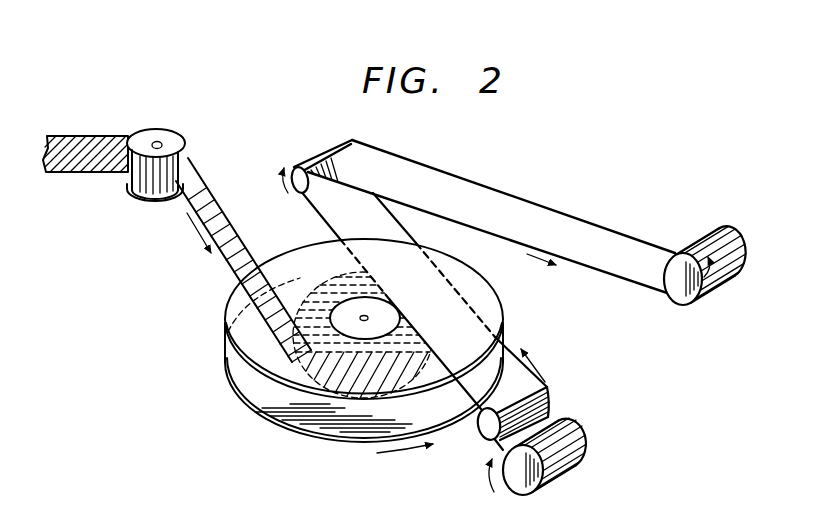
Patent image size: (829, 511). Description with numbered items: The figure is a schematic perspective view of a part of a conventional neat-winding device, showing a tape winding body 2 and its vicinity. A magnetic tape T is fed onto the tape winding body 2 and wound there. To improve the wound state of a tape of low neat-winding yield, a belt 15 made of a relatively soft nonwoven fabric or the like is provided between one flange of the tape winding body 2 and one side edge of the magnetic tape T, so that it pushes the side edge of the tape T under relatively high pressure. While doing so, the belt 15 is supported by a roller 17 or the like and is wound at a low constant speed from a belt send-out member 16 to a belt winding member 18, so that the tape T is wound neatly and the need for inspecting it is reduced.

The tape winding body 2 is at (234, 389).
The belt 15 is at (572, 228).
The belt send-out member 16 is at (578, 470).
The roller 17 is at (296, 166).
The belt winding member 18 is at (690, 305).
The magnetic tape T is at (208, 198).